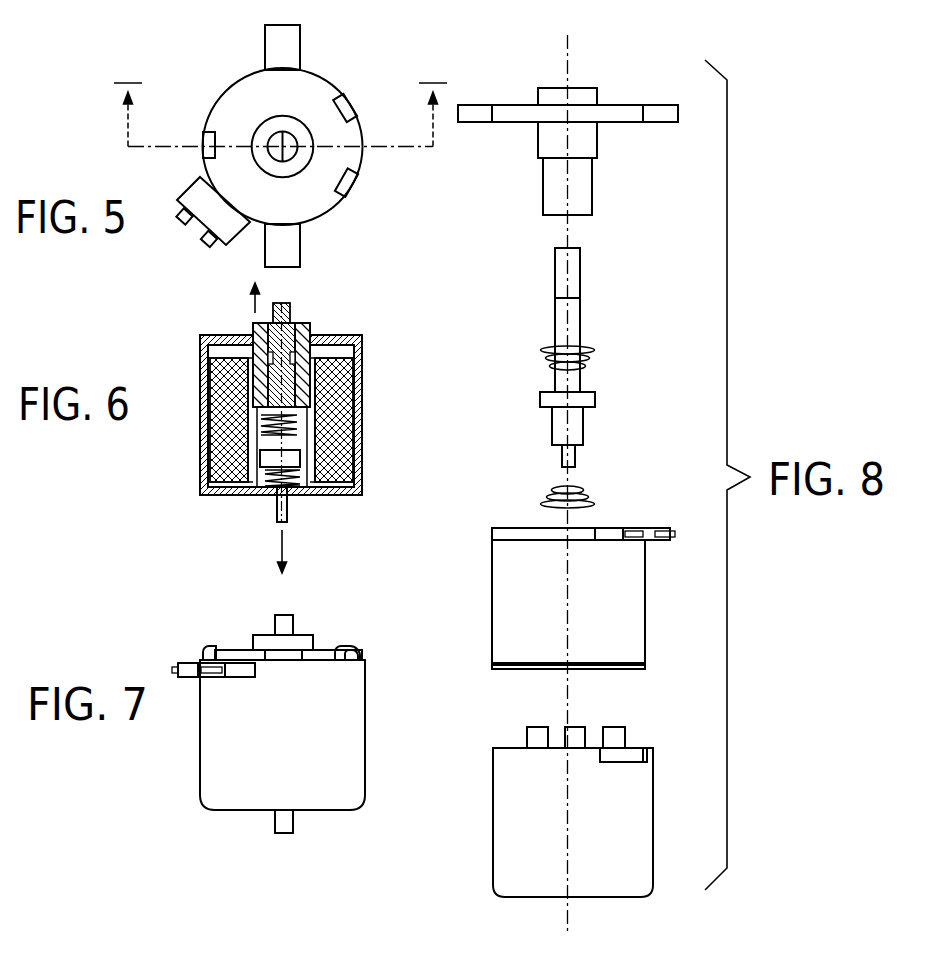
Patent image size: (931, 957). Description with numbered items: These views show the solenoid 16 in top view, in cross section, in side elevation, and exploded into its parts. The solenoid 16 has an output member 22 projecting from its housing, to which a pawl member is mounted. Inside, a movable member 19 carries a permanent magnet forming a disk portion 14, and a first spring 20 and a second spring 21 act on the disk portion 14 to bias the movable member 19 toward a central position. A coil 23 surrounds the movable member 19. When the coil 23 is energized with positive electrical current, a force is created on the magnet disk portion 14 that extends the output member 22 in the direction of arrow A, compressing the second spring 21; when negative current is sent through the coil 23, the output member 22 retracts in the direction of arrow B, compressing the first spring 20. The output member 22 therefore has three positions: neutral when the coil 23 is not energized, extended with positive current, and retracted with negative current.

In FIG. 6, the disk portion 14 is at (258, 465).
In FIG. 5, the solenoid 16 is at (362, 211).
In FIG. 6, the solenoid 16 is at (272, 413).
In FIG. 7, the solenoid 16 is at (306, 705).
In FIG. 6, the movable member 19 is at (308, 328).
In FIG. 6, the first spring 20 is at (272, 487).
In FIG. 8, the first spring 20 is at (590, 493).
In FIG. 6, the second spring 21 is at (263, 430).
In FIG. 8, the second spring 21 is at (597, 348).
In FIG. 6, the output member 22 is at (284, 303).
In FIG. 7, the output member 22 is at (293, 617).
In FIG. 6, the coil 23 is at (340, 437).